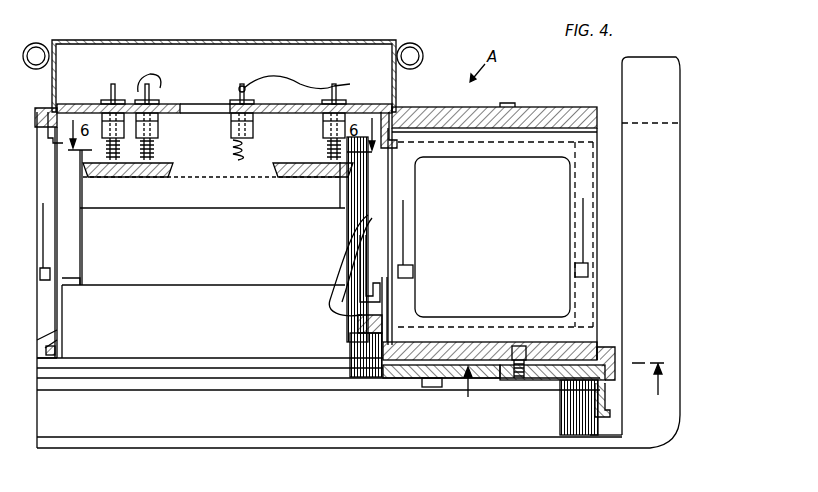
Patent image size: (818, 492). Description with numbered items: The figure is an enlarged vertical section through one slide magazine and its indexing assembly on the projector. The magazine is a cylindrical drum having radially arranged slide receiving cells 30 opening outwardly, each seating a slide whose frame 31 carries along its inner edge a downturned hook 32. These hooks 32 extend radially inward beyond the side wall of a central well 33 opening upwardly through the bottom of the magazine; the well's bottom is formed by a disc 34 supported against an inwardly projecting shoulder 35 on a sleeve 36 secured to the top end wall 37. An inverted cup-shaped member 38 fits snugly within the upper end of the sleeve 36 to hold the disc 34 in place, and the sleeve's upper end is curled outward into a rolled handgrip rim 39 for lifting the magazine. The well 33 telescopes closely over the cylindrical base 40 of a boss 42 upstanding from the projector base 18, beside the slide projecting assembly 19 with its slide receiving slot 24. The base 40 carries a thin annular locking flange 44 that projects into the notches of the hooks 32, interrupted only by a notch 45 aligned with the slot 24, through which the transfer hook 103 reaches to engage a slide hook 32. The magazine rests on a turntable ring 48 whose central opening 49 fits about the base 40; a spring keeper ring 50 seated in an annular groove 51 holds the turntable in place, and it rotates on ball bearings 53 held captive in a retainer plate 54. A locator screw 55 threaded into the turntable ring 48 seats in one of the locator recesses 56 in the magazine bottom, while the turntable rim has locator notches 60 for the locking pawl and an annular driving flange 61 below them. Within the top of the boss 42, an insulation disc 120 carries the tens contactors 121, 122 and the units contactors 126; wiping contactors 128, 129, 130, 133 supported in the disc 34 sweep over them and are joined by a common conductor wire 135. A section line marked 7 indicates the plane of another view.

The main frame or base 18 is at (546, 446).
The slide projecting assembly 19 is at (722, 187).
The slide receiving slot 24 is at (612, 352).
The slide receiving cell 30 is at (574, 124).
The slide frame 31 is at (98, 222).
The downturned hook 32 is at (76, 279).
The central well 33 is at (60, 348).
The disc 34 is at (295, 114).
The inwardly projecting shoulder 35 is at (398, 91).
The sleeve 36 is at (397, 80).
The top end wall 37 is at (504, 104).
The inverted cup-shaped member 38 is at (262, 42).
The rolled handgrip rim 39 is at (420, 44).
The cylindrical base 40 is at (50, 316).
The boss 42 is at (72, 258).
The annular locking flange 44 is at (214, 284).
The notch 45 is at (346, 220).
The turntable ring 48 is at (560, 375).
The central opening 49 is at (374, 378).
The spring keeper ring 50 is at (378, 352).
The annular groove 51 is at (236, 360).
The ball bearings 53 is at (422, 388).
The retainer plate 54 is at (432, 388).
The locator screw 55 is at (526, 350).
The locator recess 56 is at (514, 346).
The locator notch 60 is at (606, 355).
The driving flange 61 is at (608, 414).
The transfer hook 103 is at (342, 330).
The insulation disc 120 is at (212, 185).
The tens contactor 121 is at (152, 172).
The tens contactor 122 is at (300, 170).
The units contactor 126 is at (117, 174).
The inner contactor 128 is at (158, 92).
The intermediate contactor 129 is at (103, 96).
The intermediate contactor 130 is at (335, 86).
The outer contactor 133 is at (243, 86).
The common conductor wire 135 is at (140, 84).
The section line 7 is at (564, 387).